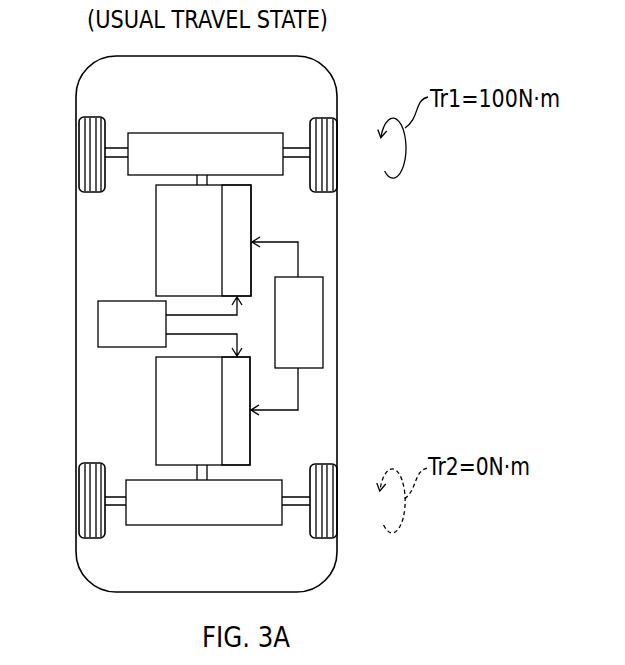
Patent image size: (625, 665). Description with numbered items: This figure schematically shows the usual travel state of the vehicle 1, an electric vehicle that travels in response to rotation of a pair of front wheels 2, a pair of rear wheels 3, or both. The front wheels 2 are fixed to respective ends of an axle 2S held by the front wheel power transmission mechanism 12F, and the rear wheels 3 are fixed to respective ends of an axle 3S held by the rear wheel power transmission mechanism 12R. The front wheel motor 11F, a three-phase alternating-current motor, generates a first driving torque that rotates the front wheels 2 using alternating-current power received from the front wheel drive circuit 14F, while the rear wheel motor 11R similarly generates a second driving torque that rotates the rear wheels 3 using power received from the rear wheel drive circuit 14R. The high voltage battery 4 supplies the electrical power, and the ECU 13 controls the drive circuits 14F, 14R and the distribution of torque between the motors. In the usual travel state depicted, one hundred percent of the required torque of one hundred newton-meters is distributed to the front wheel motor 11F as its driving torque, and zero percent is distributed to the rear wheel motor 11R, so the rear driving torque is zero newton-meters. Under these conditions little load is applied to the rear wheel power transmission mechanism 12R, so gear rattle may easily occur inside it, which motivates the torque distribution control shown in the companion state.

The vehicle 1 is at (337, 268).
The front wheels 2 is at (79, 142).
The rear wheels 3 is at (79, 497).
The axle 2S is at (122, 148).
The axle 3S is at (115, 505).
The front wheel power transmission mechanism 12F is at (185, 133).
The rear wheel power transmission mechanism 12R is at (223, 525).
The front wheel motor 11F is at (212, 240).
The rear wheel motor 11R is at (212, 411).
The front wheel drive circuit 14F is at (251, 220).
The rear wheel drive circuit 14R is at (250, 443).
The high voltage battery 4 is at (122, 347).
The ECU 13 is at (315, 368).